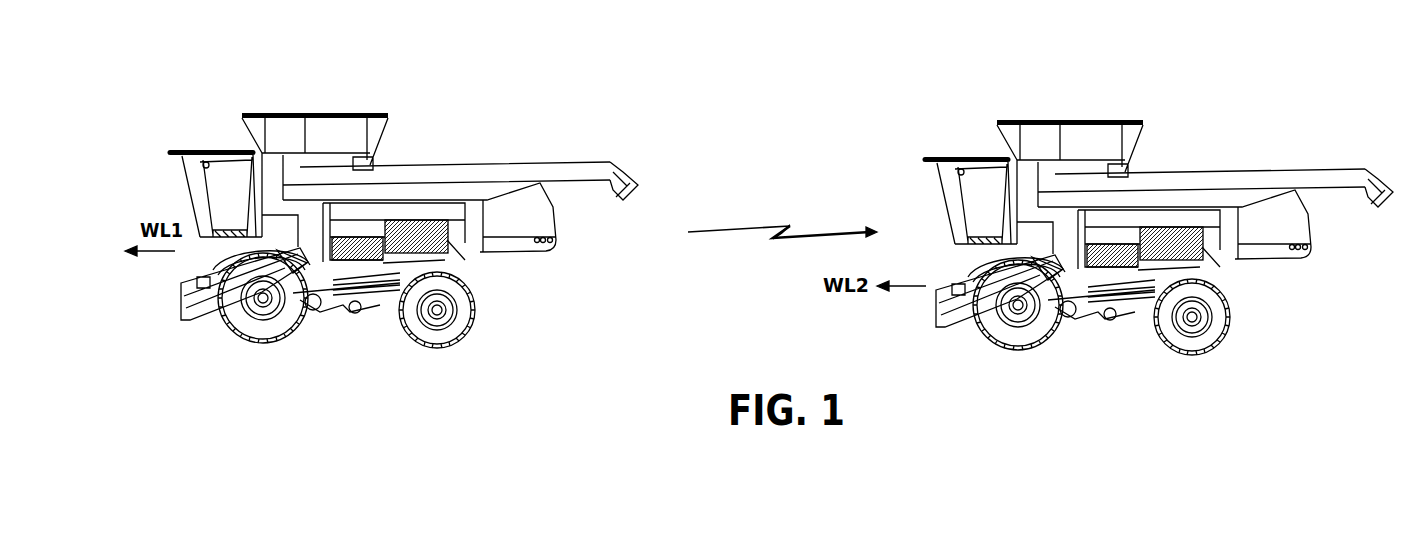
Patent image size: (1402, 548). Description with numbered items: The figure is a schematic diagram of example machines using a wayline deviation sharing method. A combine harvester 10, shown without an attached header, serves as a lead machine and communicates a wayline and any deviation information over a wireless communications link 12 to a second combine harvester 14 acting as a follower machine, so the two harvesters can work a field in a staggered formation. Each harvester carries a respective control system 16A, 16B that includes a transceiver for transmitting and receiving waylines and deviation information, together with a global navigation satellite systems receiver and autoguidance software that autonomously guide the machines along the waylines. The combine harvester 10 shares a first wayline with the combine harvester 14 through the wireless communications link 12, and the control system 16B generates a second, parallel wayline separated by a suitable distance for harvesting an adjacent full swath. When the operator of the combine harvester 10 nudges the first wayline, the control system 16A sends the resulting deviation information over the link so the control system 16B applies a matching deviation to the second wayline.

The combine harvester 10 is at (263, 85).
The wireless communications link 12 is at (712, 227).
The combine harvester 14 is at (910, 160).
The control system 16A is at (247, 207).
The control system 16B is at (971, 202).